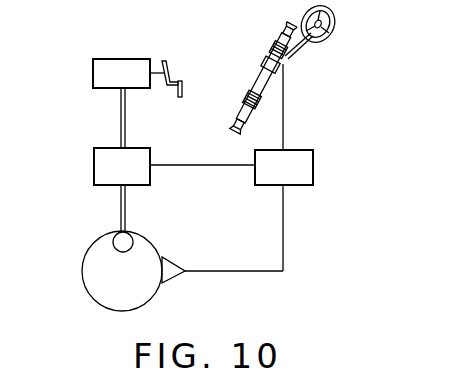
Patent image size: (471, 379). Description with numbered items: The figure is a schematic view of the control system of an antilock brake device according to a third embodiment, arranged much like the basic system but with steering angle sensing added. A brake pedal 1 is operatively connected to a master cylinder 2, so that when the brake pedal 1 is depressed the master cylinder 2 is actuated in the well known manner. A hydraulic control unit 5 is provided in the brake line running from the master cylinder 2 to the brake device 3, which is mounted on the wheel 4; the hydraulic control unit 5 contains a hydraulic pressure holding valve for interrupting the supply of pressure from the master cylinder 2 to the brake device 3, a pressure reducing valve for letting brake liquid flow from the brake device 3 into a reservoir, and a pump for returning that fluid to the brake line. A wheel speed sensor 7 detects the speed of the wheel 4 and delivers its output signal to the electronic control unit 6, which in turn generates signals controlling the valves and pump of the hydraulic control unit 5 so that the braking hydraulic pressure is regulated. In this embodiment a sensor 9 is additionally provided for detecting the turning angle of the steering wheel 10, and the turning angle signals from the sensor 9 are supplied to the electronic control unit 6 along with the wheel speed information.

The brake pedal 1 is at (183, 84).
The master cylinder 2 is at (93, 72).
The brake device 3 is at (116, 240).
The wheel 4 is at (87, 284).
The hydraulic control unit 5 is at (94, 168).
The electronic control unit 6 is at (298, 186).
The wheel speed sensor 7 is at (172, 262).
The sensor 9 is at (291, 70).
The steering wheel 10 is at (328, 43).